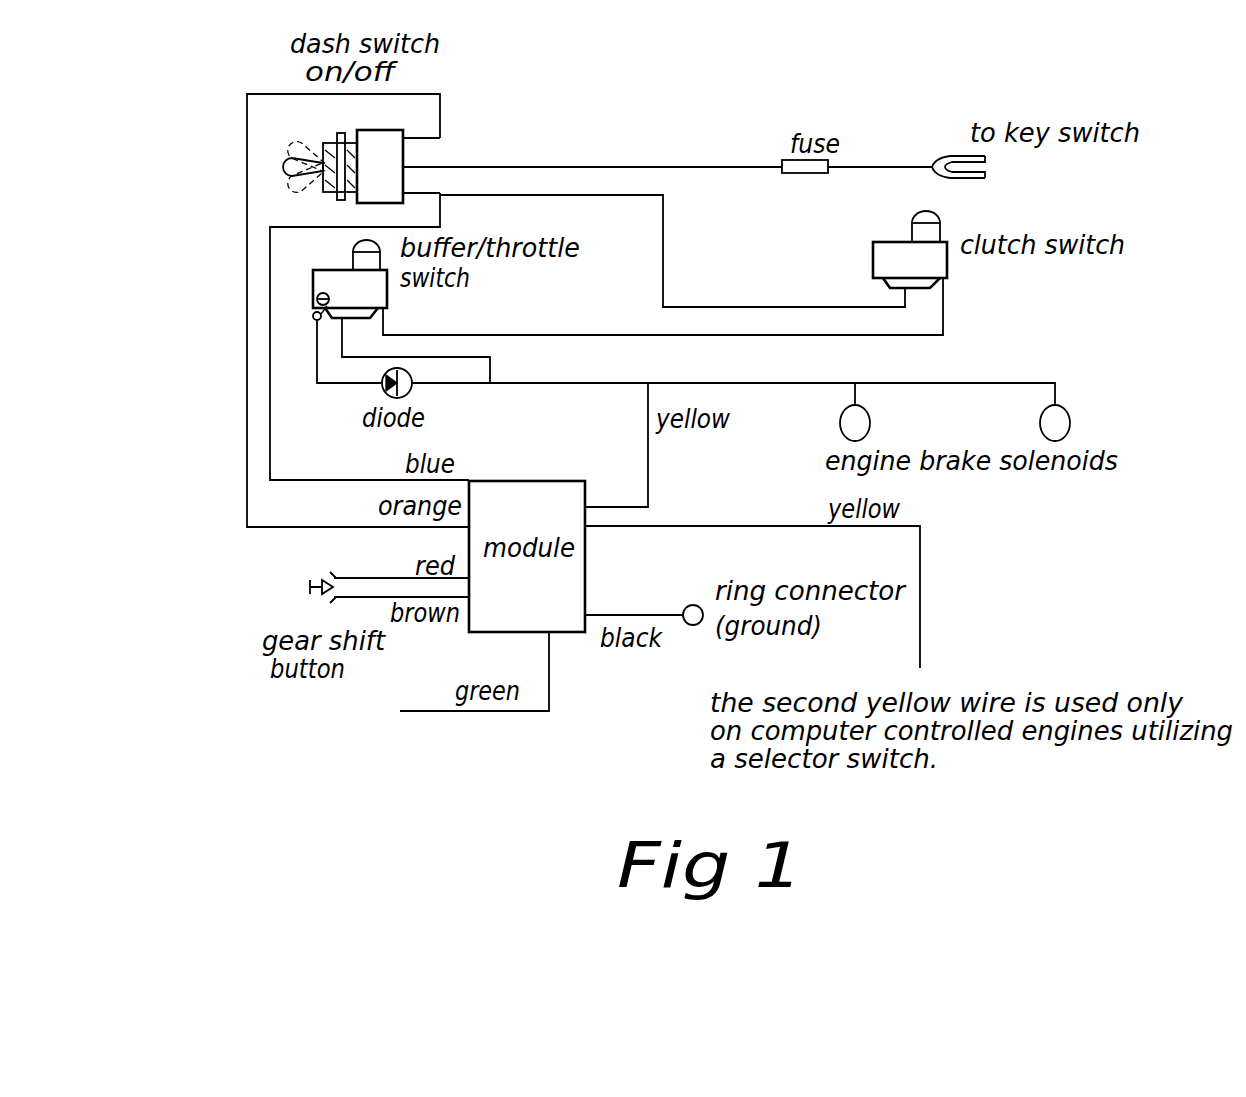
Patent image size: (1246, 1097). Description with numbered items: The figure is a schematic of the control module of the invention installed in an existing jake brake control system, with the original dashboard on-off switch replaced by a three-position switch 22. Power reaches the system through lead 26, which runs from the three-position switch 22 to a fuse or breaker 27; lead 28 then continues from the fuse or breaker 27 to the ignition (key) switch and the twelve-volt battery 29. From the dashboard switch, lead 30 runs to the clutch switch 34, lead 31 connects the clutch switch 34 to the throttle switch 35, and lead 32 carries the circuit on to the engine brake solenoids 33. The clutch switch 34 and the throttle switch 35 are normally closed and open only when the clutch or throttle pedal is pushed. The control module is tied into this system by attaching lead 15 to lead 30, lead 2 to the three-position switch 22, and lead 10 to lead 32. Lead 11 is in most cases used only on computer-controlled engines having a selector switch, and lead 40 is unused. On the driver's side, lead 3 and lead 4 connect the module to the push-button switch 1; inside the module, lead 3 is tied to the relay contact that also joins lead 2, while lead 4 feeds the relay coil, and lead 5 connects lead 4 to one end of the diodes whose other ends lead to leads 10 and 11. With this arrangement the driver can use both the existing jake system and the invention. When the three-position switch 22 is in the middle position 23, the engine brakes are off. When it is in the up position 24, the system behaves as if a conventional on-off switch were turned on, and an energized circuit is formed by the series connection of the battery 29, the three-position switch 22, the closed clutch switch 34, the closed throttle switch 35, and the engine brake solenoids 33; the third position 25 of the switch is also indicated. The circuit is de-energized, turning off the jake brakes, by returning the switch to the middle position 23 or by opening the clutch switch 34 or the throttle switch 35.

The push-button switch 1 is at (312, 586).
The lead 2 is at (286, 94).
The lead 3 is at (350, 578).
The lead 4 is at (344, 598).
The lead 5 is at (622, 612).
The lead 10 is at (654, 489).
The lead 11 is at (740, 525).
The lead 15 is at (323, 479).
The three-position switch 22 is at (366, 148).
The middle position 23 is at (278, 167).
The up position 24 is at (284, 138).
The toggle lever lower position 25 is at (284, 193).
The lead 26 is at (705, 165).
The fuse or breaker 27 is at (822, 175).
The lead 28 is at (850, 169).
The battery 29 is at (979, 166).
The lead 30 is at (665, 252).
The lead 31 is at (796, 337).
The lead 32 is at (540, 386).
The engine brake solenoids 33 is at (963, 382).
The clutch switch 34 is at (948, 262).
The throttle switch 35 is at (390, 297).
The lead 40 is at (490, 712).